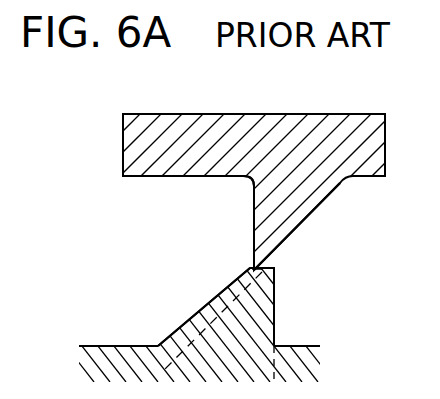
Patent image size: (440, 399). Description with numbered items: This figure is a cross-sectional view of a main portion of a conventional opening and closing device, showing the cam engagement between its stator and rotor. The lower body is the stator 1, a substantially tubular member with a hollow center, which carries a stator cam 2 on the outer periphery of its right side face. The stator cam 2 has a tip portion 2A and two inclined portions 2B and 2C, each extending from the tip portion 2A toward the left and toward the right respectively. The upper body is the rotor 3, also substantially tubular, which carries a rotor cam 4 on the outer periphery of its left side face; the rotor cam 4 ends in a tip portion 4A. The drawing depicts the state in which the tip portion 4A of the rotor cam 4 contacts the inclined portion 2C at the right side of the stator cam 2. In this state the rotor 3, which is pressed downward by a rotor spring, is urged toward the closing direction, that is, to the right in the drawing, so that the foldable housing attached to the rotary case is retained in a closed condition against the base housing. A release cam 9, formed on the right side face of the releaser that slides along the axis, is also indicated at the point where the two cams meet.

The stator 1 is at (103, 370).
The stator cam 2 is at (195, 315).
The tip portion 2A is at (248, 269).
The inclined portion 2B is at (220, 289).
The inclined portion 2C is at (276, 285).
The rotor 3 is at (350, 144).
The rotor cam 4 is at (257, 213).
The tip portion 4A is at (287, 250).
The release cam 9 is at (263, 272).